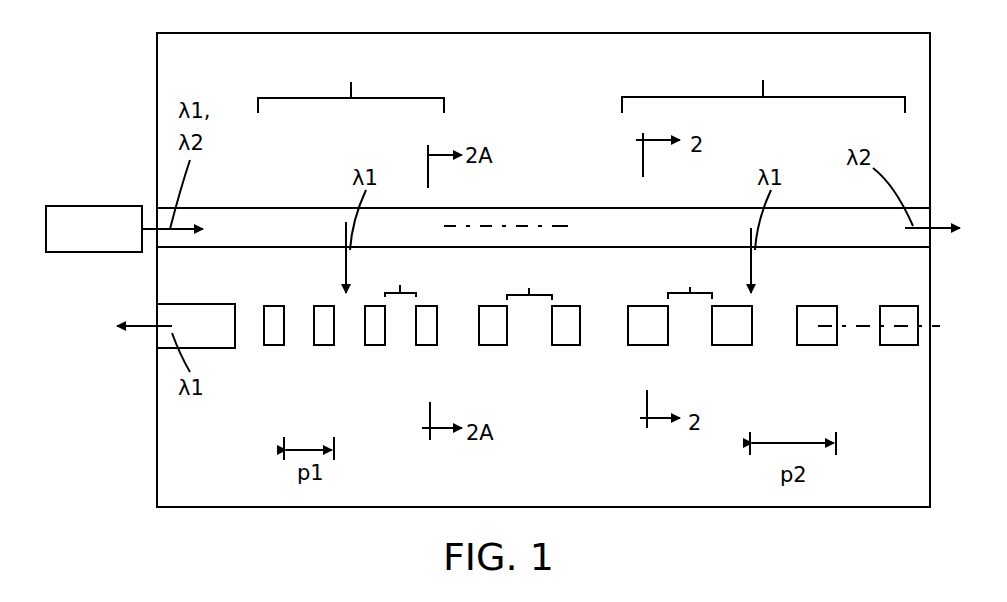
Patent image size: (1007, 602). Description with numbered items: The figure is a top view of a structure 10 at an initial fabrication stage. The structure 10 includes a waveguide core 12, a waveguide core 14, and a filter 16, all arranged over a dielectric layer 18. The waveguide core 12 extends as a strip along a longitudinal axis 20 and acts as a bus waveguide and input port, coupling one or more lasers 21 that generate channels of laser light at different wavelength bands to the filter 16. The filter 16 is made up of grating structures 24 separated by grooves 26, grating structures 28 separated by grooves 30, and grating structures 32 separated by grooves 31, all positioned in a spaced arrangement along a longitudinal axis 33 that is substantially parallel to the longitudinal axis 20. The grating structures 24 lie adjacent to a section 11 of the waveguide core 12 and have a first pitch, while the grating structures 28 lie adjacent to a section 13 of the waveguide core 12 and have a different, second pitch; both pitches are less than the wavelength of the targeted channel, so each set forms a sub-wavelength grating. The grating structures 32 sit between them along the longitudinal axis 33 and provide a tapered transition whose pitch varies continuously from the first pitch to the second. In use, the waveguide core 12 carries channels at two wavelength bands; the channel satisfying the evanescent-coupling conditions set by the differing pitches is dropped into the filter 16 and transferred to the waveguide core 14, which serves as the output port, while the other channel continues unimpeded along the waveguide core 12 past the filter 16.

The structure 10 is at (180, 65).
The section of the waveguide core 11 is at (351, 82).
The waveguide core 12 is at (309, 226).
The section of the waveguide core 13 is at (763, 82).
The waveguide core 14 is at (215, 330).
The filter 16 is at (303, 295).
The dielectric layer 18 is at (200, 462).
The longitudinal axis 20 is at (503, 226).
The lasers 21 is at (82, 205).
The grating structures 24 is at (373, 333).
The grooves 26 is at (411, 303).
The grating structures 28 is at (733, 334).
The grooves 30 is at (670, 303).
The grooves 31 is at (543, 304).
The grating structures 32 is at (492, 333).
The longitudinal axis 33 is at (853, 327).